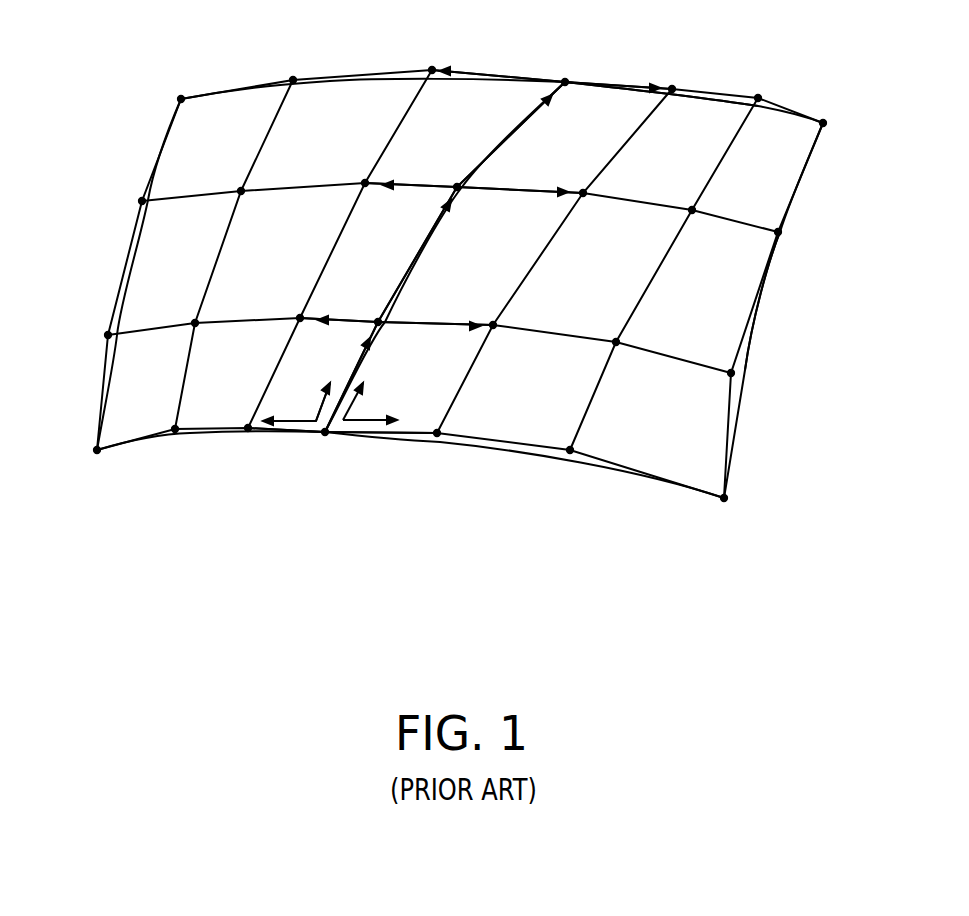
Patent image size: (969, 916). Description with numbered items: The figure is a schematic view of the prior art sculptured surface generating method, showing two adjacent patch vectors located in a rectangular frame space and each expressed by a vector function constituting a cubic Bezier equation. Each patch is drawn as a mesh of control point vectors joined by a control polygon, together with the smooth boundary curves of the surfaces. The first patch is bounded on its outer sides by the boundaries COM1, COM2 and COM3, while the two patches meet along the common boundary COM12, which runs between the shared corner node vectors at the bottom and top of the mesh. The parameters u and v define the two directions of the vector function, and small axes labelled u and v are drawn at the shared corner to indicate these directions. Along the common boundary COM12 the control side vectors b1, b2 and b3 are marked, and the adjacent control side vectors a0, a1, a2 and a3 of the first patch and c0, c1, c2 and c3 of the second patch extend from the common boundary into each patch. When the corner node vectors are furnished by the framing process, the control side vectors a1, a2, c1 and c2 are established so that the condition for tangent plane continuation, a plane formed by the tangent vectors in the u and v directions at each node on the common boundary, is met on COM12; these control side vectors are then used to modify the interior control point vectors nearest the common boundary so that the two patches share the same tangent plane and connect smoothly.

The boundary COM1 is at (507, 455).
The boundary COM2 is at (766, 294).
The boundary COM3 is at (700, 104).
The common boundary COM12 is at (417, 262).
The control side vector a0 is at (397, 440).
The control side vector a1 is at (434, 332).
The control side vector a2 is at (520, 206).
The control side vector a3 is at (607, 87).
The control side vector b1 is at (360, 345).
The control side vector b2 is at (409, 268).
The control side vector b3 is at (492, 152).
The control side vector c0 is at (289, 436).
The control side vector c1 is at (334, 312).
The control side vector c2 is at (430, 182).
The control side vector c3 is at (480, 76).
The parameter u is at (340, 404).
The parameter v is at (350, 384).